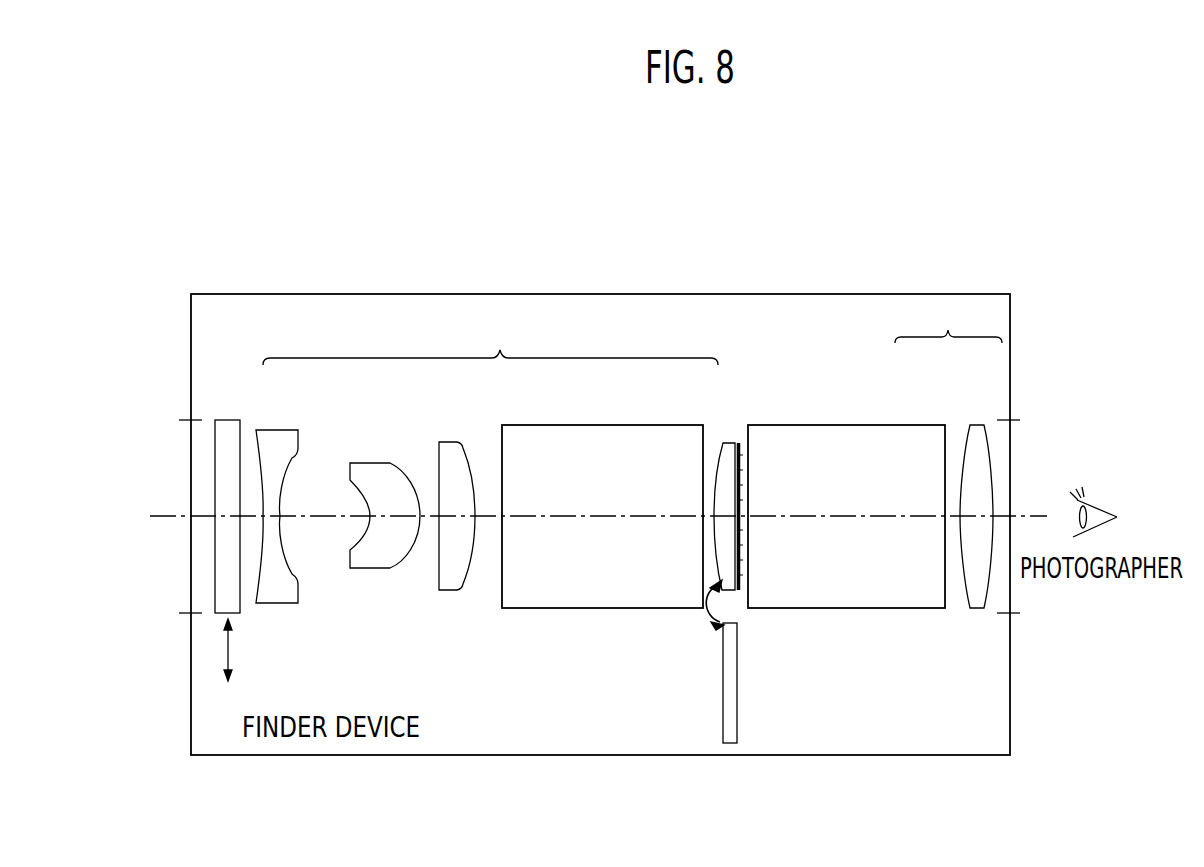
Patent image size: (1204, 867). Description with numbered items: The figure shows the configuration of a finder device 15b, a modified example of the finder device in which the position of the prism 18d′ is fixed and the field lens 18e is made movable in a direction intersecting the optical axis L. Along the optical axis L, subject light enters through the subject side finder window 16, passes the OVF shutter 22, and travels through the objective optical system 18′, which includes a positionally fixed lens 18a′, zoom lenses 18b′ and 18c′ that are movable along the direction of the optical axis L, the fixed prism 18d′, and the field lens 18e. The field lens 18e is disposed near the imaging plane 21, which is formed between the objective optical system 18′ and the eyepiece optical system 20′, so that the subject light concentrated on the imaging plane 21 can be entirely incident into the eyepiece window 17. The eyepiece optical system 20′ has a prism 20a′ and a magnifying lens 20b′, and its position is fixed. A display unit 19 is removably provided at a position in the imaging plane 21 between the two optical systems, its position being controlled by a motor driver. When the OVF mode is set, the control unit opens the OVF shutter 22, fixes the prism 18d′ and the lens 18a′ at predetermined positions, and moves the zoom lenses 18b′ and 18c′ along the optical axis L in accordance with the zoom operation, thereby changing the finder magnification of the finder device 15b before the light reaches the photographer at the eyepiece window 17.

The finder device 15b is at (741, 294).
The subject side finder window 16 is at (191, 600).
The eyepiece window 17 is at (1010, 432).
The objective optical system 18′ is at (490, 343).
The lens 18a′ is at (281, 430).
The zoom lens 18b′ is at (367, 463).
The zoom lens 18c′ is at (452, 442).
The prism 18d′ is at (580, 433).
The field lens 18e is at (727, 443).
The display unit 19 is at (723, 640).
The eyepiece optical system 20′ is at (948, 322).
The prism 20a′ is at (920, 425).
The magnifying lens 20b′ is at (978, 425).
The imaging plane 21 is at (739, 453).
The OVF shutter 22 is at (226, 428).
The optical axis L is at (165, 515).